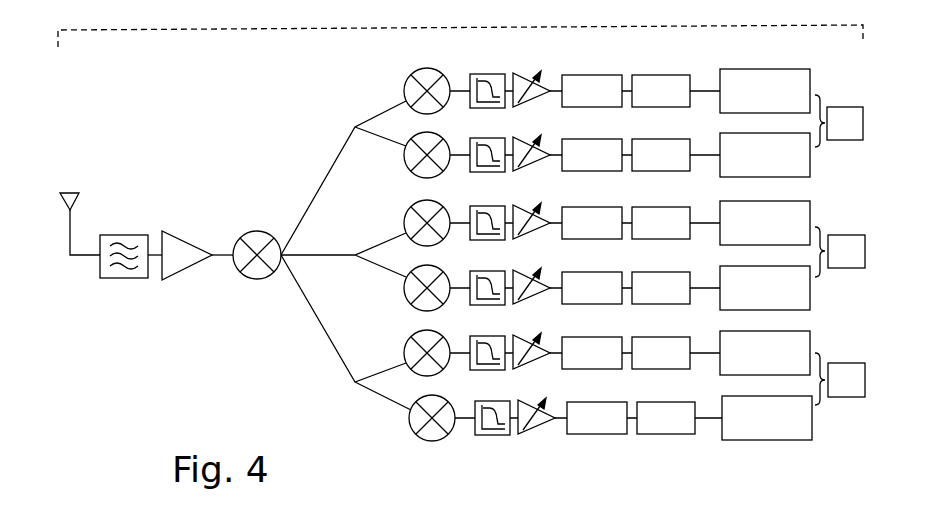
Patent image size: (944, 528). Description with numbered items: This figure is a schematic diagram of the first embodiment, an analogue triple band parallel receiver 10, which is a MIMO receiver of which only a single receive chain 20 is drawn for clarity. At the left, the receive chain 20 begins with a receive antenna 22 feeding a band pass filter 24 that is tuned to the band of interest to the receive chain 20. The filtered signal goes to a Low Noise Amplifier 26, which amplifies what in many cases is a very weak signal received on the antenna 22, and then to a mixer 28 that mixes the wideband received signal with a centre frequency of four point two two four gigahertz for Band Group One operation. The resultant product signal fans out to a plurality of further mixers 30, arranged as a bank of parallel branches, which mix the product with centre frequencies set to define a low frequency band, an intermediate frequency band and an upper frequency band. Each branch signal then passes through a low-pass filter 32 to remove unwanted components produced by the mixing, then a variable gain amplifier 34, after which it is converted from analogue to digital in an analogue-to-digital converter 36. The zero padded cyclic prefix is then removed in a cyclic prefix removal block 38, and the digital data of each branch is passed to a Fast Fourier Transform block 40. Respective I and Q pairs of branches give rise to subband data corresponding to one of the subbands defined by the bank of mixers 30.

The analogue triple band parallel receiver 10 is at (143, 345).
The receive chain 20 is at (622, 25).
The receive antenna 22 is at (75, 222).
The band pass filter 24 is at (123, 235).
The Low Noise Amplifier 26 is at (183, 273).
The mixer 28 is at (253, 280).
The further mixers 30 is at (424, 441).
The low-pass filter 32 is at (492, 436).
The variable gain amplifier 34 is at (538, 435).
The analogue-to-digital converter 36 is at (596, 434).
The cyclic prefix removal block 38 is at (670, 434).
The Fast Fourier Transform block 40 is at (765, 440).